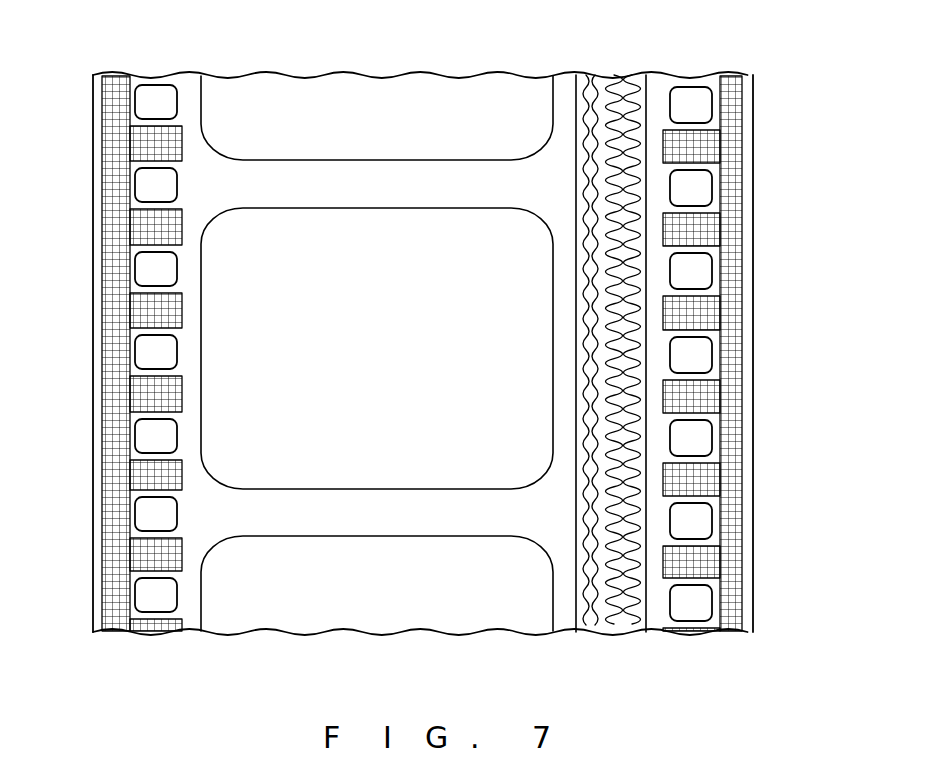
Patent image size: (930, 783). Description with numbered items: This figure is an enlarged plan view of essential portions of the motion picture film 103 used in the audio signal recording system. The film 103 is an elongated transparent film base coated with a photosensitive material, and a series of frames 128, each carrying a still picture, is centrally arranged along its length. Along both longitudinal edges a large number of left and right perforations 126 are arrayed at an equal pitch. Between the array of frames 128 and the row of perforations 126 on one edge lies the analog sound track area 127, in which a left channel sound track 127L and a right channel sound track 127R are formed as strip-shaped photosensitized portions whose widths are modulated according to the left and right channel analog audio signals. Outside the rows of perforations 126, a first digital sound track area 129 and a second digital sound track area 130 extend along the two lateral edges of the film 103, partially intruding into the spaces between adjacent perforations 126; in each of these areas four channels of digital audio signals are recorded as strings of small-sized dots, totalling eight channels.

The motion picture film 103 is at (754, 424).
The perforations 126 is at (152, 450).
The analog sound track area 127 is at (695, 382).
The left channel sound track 127L is at (590, 633).
The right channel sound track 127R is at (625, 625).
The frames 128 is at (545, 96).
The first digital sound track area 129 is at (742, 468).
The second digital sound track area 130 is at (180, 392).